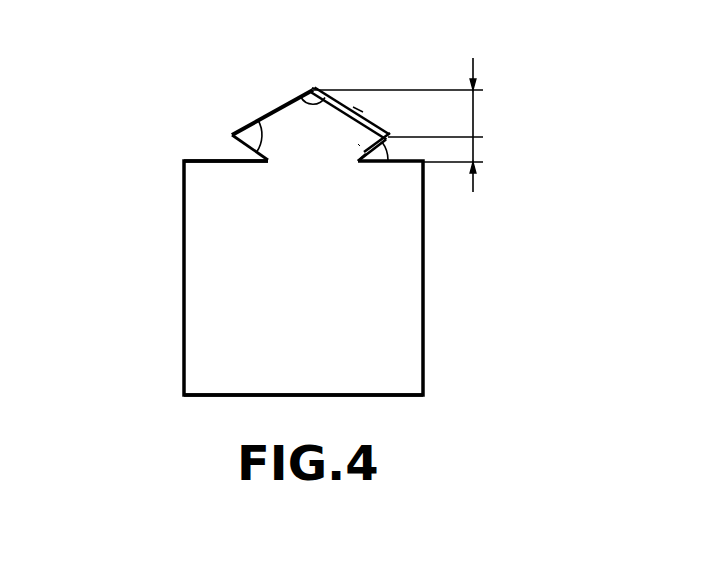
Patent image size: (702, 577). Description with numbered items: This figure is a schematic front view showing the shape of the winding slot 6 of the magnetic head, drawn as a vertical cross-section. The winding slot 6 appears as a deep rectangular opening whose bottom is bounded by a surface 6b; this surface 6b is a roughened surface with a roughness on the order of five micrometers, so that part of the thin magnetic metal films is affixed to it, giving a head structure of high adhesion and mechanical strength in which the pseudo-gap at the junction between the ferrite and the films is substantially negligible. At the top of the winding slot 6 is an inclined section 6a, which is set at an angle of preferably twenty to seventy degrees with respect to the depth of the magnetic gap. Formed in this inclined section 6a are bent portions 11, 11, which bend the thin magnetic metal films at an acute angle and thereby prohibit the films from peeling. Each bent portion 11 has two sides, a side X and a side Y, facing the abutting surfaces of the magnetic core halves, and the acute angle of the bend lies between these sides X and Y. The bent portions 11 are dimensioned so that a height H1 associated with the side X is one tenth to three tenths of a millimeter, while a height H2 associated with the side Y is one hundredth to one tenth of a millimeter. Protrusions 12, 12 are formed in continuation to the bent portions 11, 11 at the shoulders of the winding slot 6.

The winding slot 6 is at (175, 255).
The inclined section 6a is at (290, 103).
The bottom surface 6b is at (380, 395).
The bent portion 11 is at (236, 135).
The protrusion 12 is at (258, 156).
The side X is at (366, 106).
The side Y is at (351, 137).
The height H1 is at (412, 97).
The height H2 is at (467, 164).